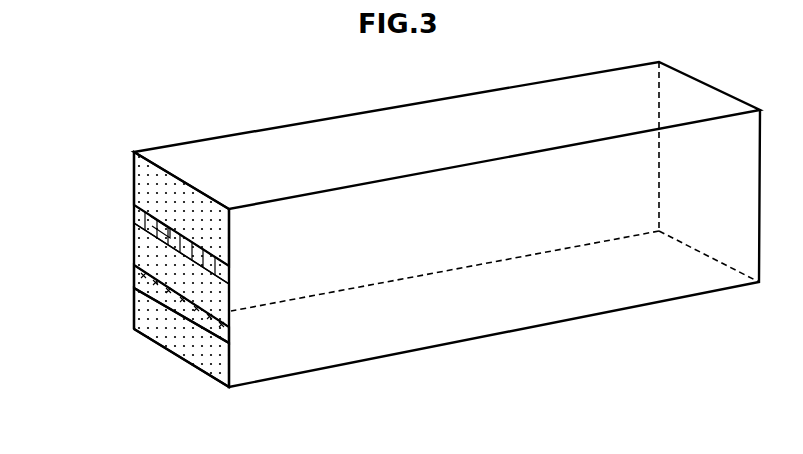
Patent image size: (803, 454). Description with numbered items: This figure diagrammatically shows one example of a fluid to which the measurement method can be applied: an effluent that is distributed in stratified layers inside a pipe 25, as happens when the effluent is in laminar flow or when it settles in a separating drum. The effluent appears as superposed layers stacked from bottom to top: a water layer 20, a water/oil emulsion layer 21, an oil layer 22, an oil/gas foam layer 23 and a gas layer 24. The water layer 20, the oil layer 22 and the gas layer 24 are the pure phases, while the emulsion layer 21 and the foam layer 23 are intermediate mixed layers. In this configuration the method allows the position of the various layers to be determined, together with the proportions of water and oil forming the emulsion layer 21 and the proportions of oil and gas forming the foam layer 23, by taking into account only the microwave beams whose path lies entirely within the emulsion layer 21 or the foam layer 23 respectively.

The water layer 20 is at (165, 334).
The water/oil emulsion layer 21 is at (128, 304).
The oil layer 22 is at (172, 269).
The oil/gas foam layer 23 is at (128, 244).
The gas layer 24 is at (128, 209).
The pipe 25 is at (286, 83).